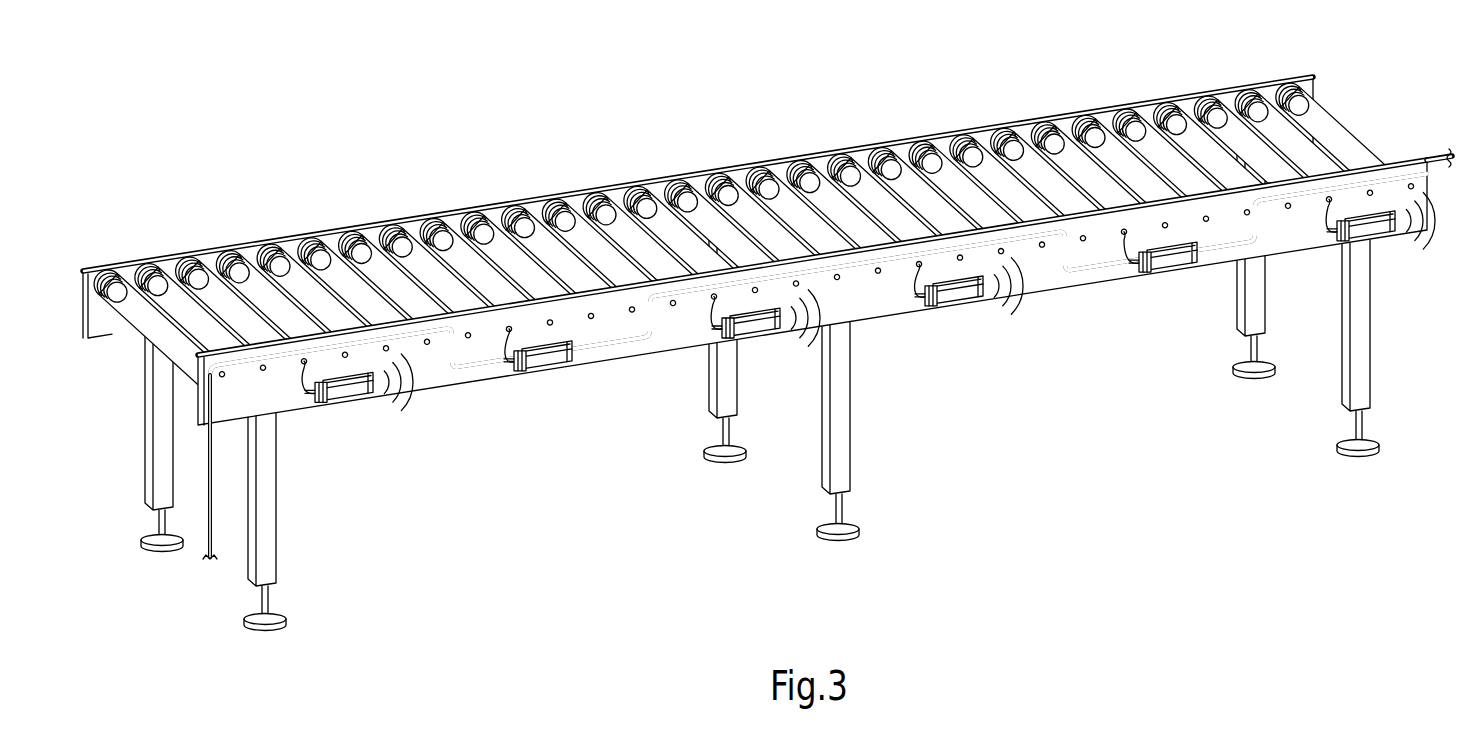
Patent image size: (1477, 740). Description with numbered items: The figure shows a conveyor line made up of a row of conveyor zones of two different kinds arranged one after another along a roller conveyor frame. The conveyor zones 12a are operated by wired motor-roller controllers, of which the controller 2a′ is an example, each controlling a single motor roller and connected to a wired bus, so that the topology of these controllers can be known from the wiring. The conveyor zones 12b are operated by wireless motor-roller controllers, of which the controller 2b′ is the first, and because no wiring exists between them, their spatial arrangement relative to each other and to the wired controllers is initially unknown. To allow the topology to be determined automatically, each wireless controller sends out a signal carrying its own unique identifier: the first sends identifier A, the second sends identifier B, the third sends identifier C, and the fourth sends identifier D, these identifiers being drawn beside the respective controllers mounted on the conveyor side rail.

The conveyor zone 12a is at (752, 206).
The conveyor zone 12b is at (750, 206).
The wired motor-roller controller 2a′ is at (552, 362).
The wireless motor-roller controller 2b′ is at (347, 395).
The unique identifier A is at (359, 503).
The identifier B is at (776, 433).
The identifier C is at (964, 404).
The identifier D is at (1394, 334).